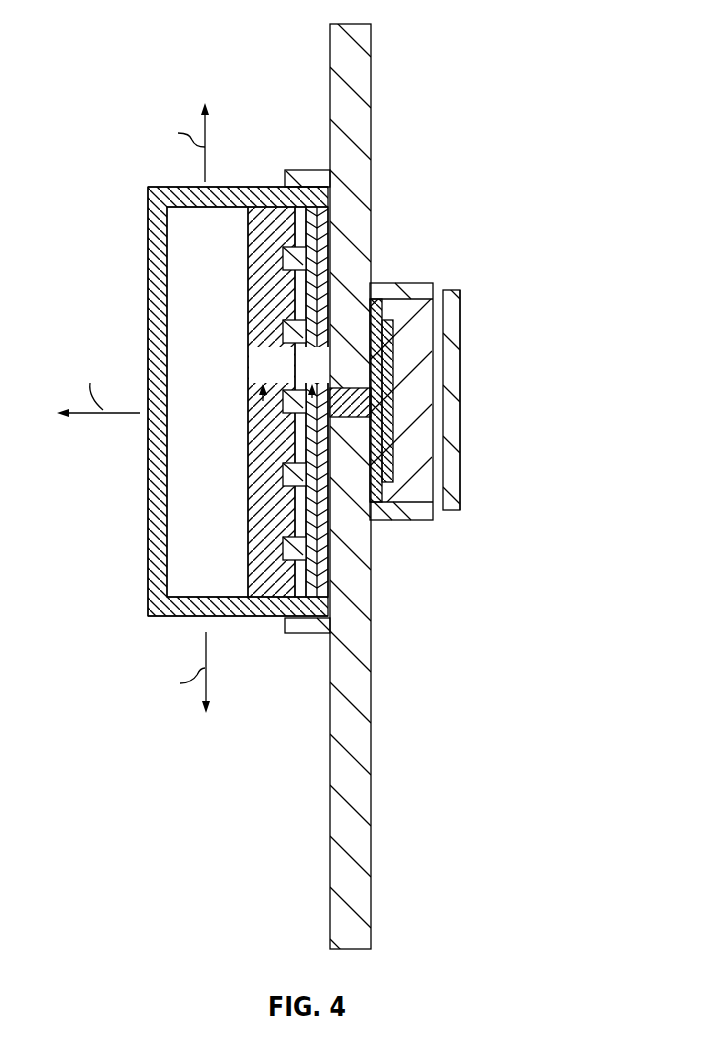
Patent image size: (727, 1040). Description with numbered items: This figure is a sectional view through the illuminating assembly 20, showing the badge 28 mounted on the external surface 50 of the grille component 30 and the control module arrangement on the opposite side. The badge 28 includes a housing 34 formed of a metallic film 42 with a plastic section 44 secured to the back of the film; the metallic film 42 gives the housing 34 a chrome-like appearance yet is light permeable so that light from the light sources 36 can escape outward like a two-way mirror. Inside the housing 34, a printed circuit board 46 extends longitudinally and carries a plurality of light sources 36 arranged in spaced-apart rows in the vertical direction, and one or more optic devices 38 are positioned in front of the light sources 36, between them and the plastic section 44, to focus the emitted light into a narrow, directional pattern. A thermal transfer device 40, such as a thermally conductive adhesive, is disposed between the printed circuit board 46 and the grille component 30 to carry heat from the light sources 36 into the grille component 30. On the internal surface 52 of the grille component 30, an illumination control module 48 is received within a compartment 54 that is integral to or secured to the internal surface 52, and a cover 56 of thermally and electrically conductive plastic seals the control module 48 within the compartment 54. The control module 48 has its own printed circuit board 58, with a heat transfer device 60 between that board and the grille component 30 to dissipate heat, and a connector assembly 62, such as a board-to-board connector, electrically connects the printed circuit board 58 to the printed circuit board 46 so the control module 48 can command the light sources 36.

The illuminating assembly 20 is at (298, 120).
The badge 28 is at (163, 170).
The grille component 30 is at (355, 75).
The housing 34 is at (148, 190).
The light sources 36 is at (295, 258).
The optic devices 38 is at (248, 527).
The thermal transfer device 40 is at (325, 268).
The metallic film 42 is at (148, 468).
The plastic section 44 is at (222, 603).
The printed circuit board 46 is at (305, 423).
The illumination control module 48 is at (410, 398).
The external surface 50 is at (330, 67).
The internal surface 52 is at (371, 152).
The compartment 54 is at (430, 278).
The cover 56 is at (460, 483).
The printed circuit board 58 is at (387, 482).
The heat transfer device 60 is at (373, 460).
The connector assembly 62 is at (378, 368).